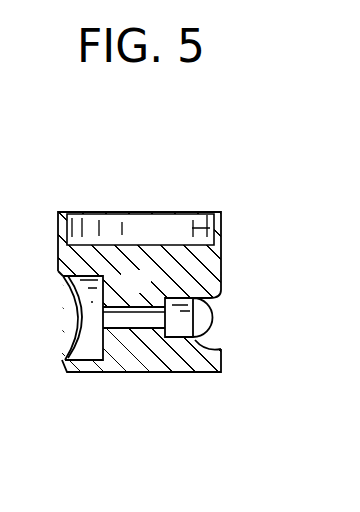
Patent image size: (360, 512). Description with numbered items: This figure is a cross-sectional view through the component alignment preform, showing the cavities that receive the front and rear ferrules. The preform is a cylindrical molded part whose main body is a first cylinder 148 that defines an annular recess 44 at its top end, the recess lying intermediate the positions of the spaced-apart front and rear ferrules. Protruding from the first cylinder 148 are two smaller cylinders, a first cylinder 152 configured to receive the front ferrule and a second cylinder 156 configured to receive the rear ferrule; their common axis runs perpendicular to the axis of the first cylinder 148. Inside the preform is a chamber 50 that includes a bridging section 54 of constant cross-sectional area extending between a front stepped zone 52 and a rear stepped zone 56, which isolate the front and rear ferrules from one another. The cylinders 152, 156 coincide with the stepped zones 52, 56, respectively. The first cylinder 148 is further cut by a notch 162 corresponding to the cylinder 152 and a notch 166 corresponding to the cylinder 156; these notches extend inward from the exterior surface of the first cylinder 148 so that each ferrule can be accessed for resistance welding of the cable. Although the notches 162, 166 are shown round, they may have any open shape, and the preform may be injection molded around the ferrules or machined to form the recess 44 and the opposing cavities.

The annular recess 44 is at (205, 228).
The first cylinder 148 is at (222, 228).
The notch 162 is at (217, 301).
The first cylinder 152 is at (193, 323).
The chamber 50 is at (130, 318).
The notch 166 is at (72, 310).
The second cylinder 156 is at (87, 341).
The rear stepped zone 56 is at (93, 371).
The bridging section 54 is at (142, 330).
The front stepped zone 52 is at (208, 372).